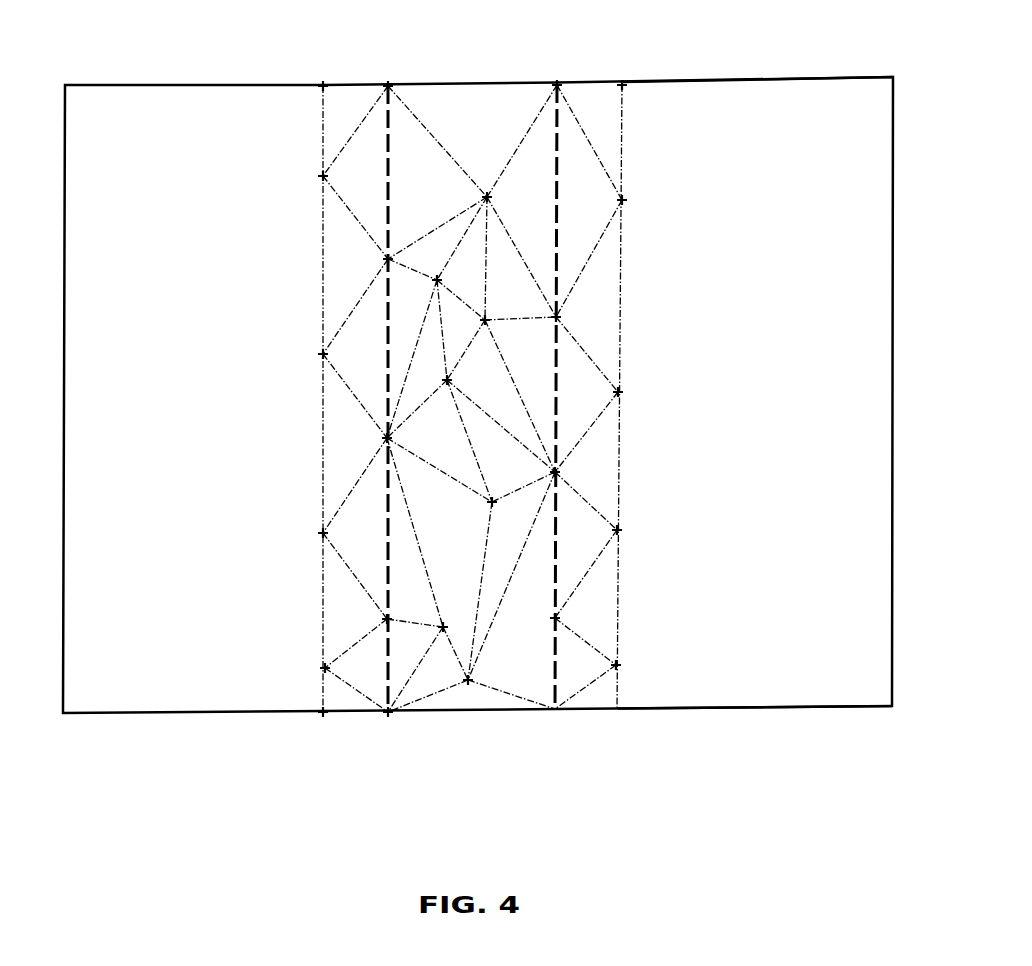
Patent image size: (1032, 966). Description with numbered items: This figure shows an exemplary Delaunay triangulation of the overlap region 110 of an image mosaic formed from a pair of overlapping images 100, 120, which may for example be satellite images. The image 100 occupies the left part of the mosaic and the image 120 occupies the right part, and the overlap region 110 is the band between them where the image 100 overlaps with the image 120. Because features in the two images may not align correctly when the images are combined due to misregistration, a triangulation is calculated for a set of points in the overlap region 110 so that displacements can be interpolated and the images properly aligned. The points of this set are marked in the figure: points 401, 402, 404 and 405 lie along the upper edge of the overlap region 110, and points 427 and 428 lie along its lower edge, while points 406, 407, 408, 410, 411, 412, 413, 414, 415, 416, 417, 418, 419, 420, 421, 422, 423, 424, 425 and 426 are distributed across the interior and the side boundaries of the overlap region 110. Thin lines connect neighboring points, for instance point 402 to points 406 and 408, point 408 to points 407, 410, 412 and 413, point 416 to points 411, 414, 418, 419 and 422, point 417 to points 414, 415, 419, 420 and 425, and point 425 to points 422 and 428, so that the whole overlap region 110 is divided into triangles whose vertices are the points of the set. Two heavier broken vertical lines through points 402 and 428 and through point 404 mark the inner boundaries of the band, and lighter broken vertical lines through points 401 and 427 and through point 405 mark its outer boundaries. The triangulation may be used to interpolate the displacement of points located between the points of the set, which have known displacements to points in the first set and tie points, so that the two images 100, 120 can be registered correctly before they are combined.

The image 100 is at (133, 698).
The overlap region 110 is at (453, 112).
The image 120 is at (857, 695).
The boundary vertex 401 is at (323, 86).
The boundary vertex 402 is at (388, 86).
The boundary vertex 404 is at (557, 85).
The boundary vertex 405 is at (622, 85).
The mesh vertex 406 is at (323, 176).
The mesh vertex 407 is at (388, 259).
The mesh vertex 408 is at (487, 197).
The mesh vertex 410 is at (437, 280).
The mesh vertex 411 is at (323, 354).
The mesh vertex 412 is at (485, 320).
The mesh vertex 413 is at (556, 317).
The mesh vertex 414 is at (447, 380).
The mesh vertex 415 is at (618, 392).
The mesh vertex 416 is at (387, 438).
The mesh vertex 417 is at (555, 472).
The mesh vertex 418 is at (323, 533).
The mesh vertex 419 is at (492, 502).
The mesh vertex 420 is at (617, 530).
The mesh vertex 421 is at (387, 619).
The mesh vertex 422 is at (443, 627).
The mesh vertex 423 is at (555, 618).
The mesh vertex 424 is at (325, 668).
The mesh vertex 425 is at (468, 680).
The mesh vertex 426 is at (616, 665).
The boundary vertex 427 is at (323, 712).
The boundary vertex 428 is at (388, 712).